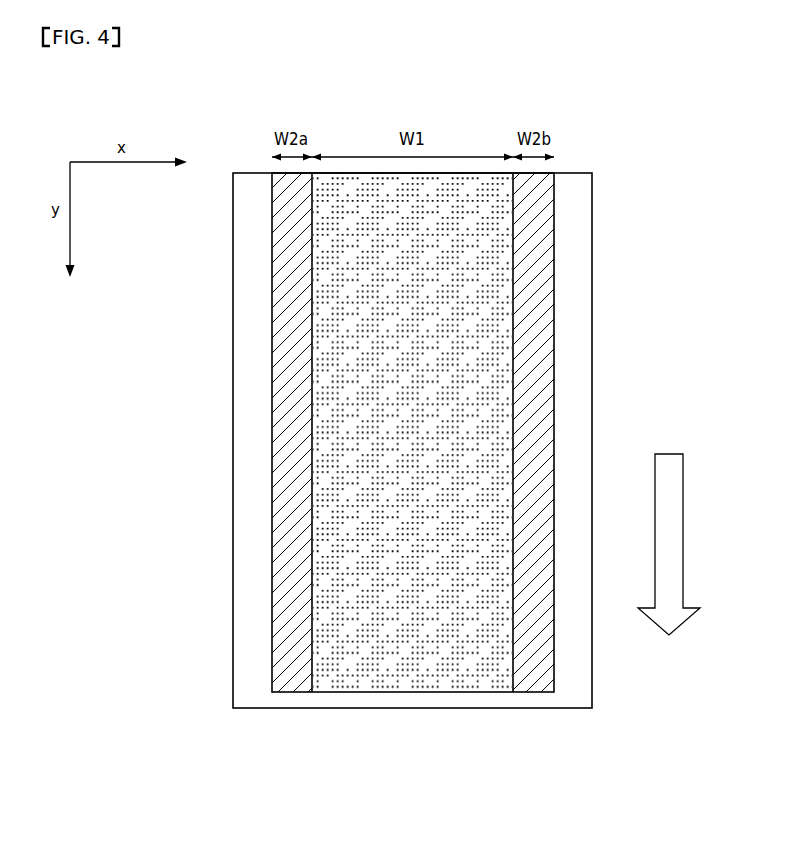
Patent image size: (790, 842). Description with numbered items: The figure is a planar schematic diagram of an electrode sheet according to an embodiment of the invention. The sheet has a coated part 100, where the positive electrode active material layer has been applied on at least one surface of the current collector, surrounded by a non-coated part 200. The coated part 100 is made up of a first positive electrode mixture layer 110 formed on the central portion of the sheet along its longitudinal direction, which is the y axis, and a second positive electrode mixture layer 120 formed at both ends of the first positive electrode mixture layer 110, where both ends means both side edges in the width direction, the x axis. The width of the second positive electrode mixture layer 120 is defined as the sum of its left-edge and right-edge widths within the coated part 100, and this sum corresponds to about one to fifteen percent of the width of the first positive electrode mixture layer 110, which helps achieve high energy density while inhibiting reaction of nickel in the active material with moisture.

The coated part 100 is at (413, 494).
The first positive electrode mixture layer 110 is at (483, 672).
The second positive electrode mixture layer 120 is at (538, 677).
The non-coated part 200 is at (578, 331).